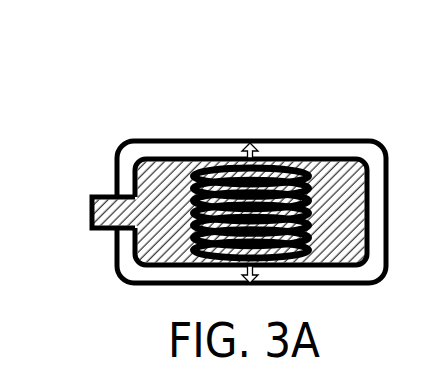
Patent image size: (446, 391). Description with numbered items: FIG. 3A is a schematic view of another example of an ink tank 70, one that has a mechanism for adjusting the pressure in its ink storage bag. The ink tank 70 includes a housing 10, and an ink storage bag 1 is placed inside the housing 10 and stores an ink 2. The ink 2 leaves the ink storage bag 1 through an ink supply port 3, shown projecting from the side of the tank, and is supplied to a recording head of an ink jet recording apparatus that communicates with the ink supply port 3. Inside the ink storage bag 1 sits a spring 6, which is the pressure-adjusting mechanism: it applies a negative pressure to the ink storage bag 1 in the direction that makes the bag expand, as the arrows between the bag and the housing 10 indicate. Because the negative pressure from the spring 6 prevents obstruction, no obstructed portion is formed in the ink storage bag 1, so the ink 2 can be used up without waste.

The ink storage bag 1 is at (167, 160).
The ink 2 is at (333, 174).
The ink supply port 3 is at (90, 207).
The spring 6 is at (312, 228).
The housing 10 is at (230, 140).
The ink tank 70 is at (312, 98).